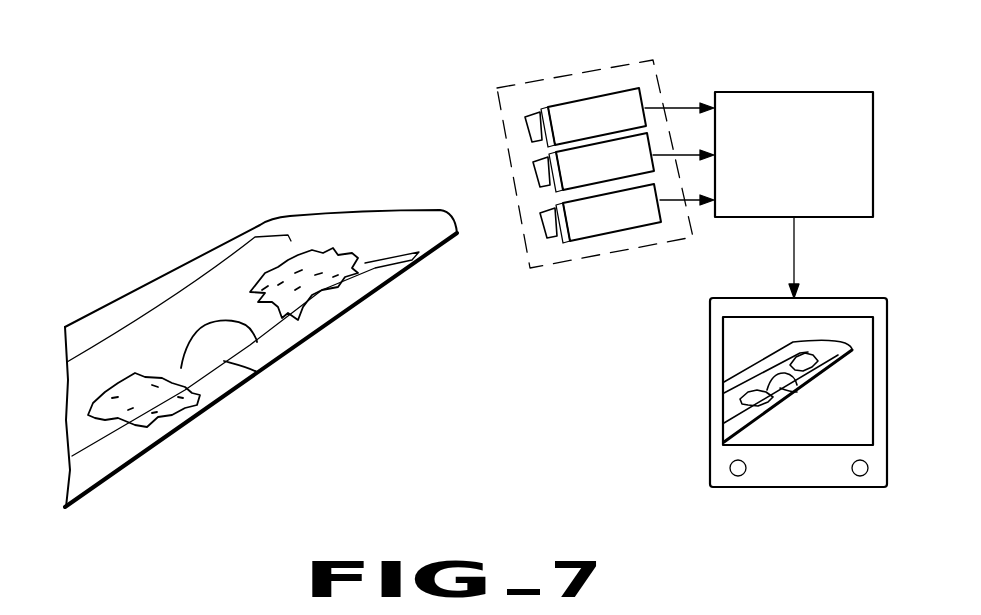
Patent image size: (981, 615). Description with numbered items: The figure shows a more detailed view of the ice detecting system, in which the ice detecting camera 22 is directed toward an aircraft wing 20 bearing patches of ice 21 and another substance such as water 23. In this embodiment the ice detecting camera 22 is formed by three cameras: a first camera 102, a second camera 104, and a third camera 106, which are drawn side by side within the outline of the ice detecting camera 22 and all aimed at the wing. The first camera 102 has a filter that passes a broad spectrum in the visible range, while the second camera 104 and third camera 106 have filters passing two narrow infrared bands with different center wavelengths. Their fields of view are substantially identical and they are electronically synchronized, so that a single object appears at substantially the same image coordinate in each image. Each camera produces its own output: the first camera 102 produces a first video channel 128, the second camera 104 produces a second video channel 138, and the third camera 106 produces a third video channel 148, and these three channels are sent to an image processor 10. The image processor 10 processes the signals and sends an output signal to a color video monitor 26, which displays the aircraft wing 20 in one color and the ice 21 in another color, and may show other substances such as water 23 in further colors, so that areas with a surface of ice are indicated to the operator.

The image processor 10 is at (827, 92).
The aircraft wing 20 is at (260, 225).
The ice 21 is at (345, 293).
The ice detecting camera 22 is at (542, 80).
The water 23 is at (256, 341).
The color video monitor 26 is at (710, 412).
The first camera 102 is at (548, 107).
The second camera 104 is at (556, 152).
The third camera 106 is at (547, 240).
The first video channel 128 is at (668, 128).
The second video channel 138 is at (683, 165).
The third video channel 148 is at (684, 195).